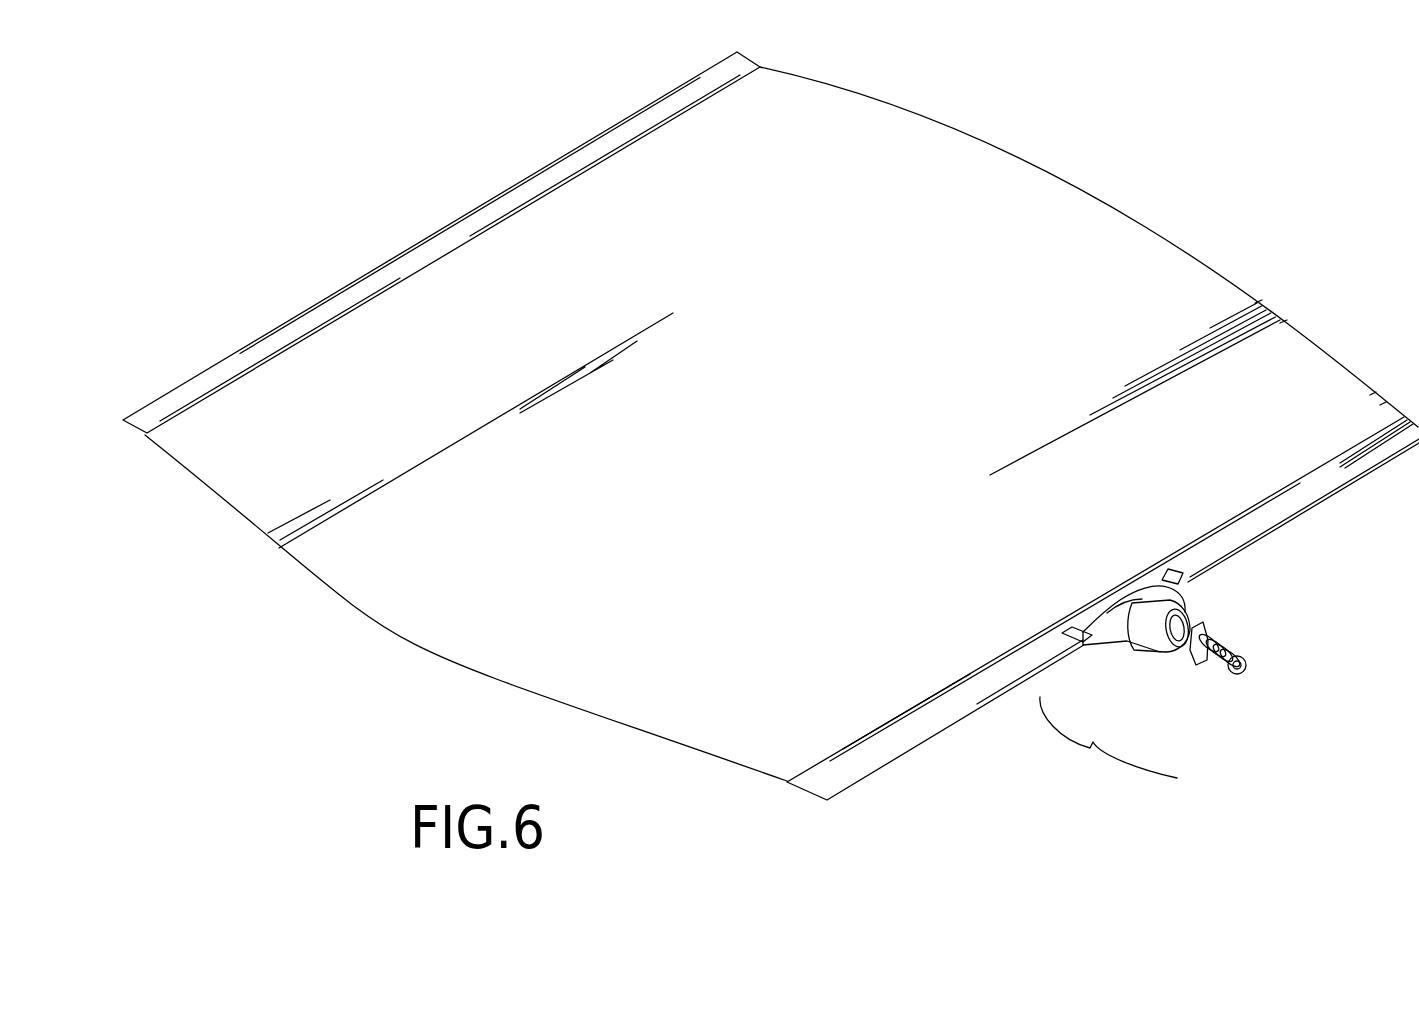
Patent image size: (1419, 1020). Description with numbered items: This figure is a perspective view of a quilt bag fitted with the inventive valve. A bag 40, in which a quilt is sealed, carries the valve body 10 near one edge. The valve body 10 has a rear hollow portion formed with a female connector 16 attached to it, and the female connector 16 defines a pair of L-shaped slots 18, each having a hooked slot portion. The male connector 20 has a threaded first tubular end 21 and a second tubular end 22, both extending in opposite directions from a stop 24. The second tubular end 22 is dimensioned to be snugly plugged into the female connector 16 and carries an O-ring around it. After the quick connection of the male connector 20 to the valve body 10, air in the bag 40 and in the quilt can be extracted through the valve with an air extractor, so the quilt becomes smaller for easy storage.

The bag 40 is at (1143, 233).
The valve body 10 is at (1127, 667).
The female connector 16 is at (1190, 622).
The L-shaped slots 18 is at (1172, 612).
The male connector 20 is at (1265, 695).
The threaded first tubular end 21 is at (1240, 657).
The second tubular end 22 is at (1215, 627).
The stop 24 is at (1225, 637).